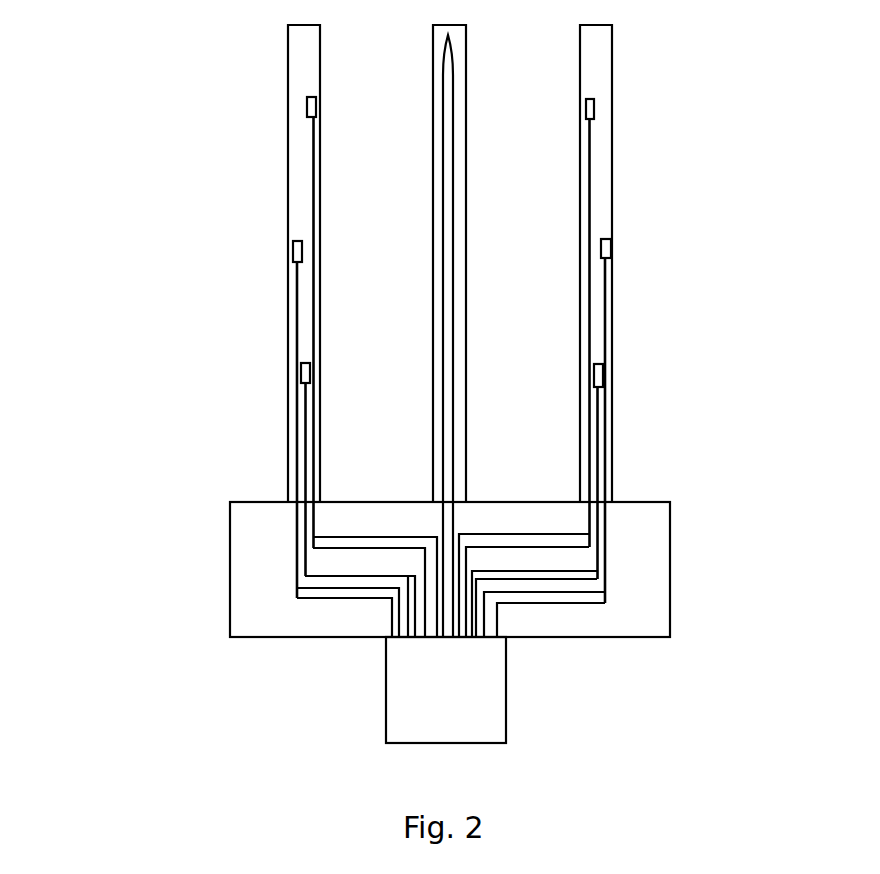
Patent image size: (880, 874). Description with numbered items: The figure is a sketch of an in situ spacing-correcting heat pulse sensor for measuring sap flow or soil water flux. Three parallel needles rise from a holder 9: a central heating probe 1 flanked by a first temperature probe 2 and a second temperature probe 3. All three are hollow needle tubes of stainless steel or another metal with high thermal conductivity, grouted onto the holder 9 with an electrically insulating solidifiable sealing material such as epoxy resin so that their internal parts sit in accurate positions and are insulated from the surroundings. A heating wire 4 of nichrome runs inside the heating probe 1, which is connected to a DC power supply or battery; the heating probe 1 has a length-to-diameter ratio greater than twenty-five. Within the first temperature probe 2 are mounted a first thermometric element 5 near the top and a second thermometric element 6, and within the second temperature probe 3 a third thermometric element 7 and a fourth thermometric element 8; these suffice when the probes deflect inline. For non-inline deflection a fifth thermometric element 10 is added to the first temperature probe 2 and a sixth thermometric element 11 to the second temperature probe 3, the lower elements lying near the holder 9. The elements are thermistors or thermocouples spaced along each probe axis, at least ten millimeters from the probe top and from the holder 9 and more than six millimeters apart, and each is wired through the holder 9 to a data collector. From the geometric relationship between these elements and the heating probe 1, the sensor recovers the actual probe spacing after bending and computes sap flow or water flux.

The heating probe 1 is at (457, 50).
The first temperature probe 2 is at (300, 58).
The second temperature probe 3 is at (598, 68).
The heating wire 4 is at (454, 230).
The first thermometric element 5 is at (308, 104).
The second thermometric element 6 is at (293, 250).
The third thermometric element 7 is at (612, 111).
The fourth thermometric element 8 is at (611, 247).
The holder 9 is at (630, 546).
The fifth thermometric element 10 is at (302, 373).
The sixth thermometric element 11 is at (603, 377).